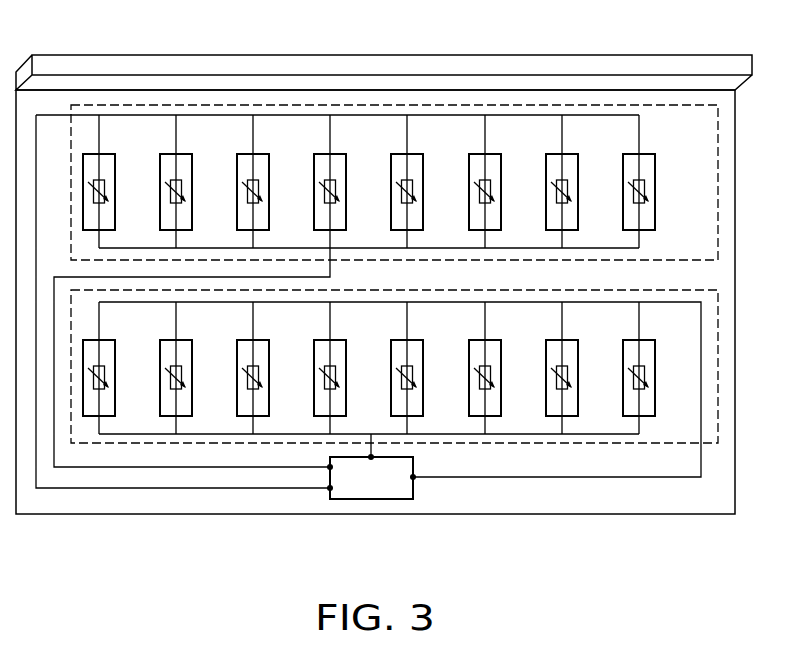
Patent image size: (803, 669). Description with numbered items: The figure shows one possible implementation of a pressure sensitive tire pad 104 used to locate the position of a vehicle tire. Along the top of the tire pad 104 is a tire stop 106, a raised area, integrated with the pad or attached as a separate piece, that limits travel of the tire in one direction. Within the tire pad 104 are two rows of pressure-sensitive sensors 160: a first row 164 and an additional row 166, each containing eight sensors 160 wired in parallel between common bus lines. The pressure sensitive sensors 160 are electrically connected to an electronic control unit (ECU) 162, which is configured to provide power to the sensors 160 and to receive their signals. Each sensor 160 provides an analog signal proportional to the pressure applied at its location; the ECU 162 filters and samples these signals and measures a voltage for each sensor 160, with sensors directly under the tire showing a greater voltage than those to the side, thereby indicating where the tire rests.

The pressure sensitive tire pad 104 is at (735, 278).
The tire stop 106 is at (517, 55).
The pressure-sensitive sensor 160 is at (115, 170).
The electronic control unit (ECU) 162 is at (371, 499).
The first row 164 is at (718, 382).
The additional row 166 is at (722, 200).